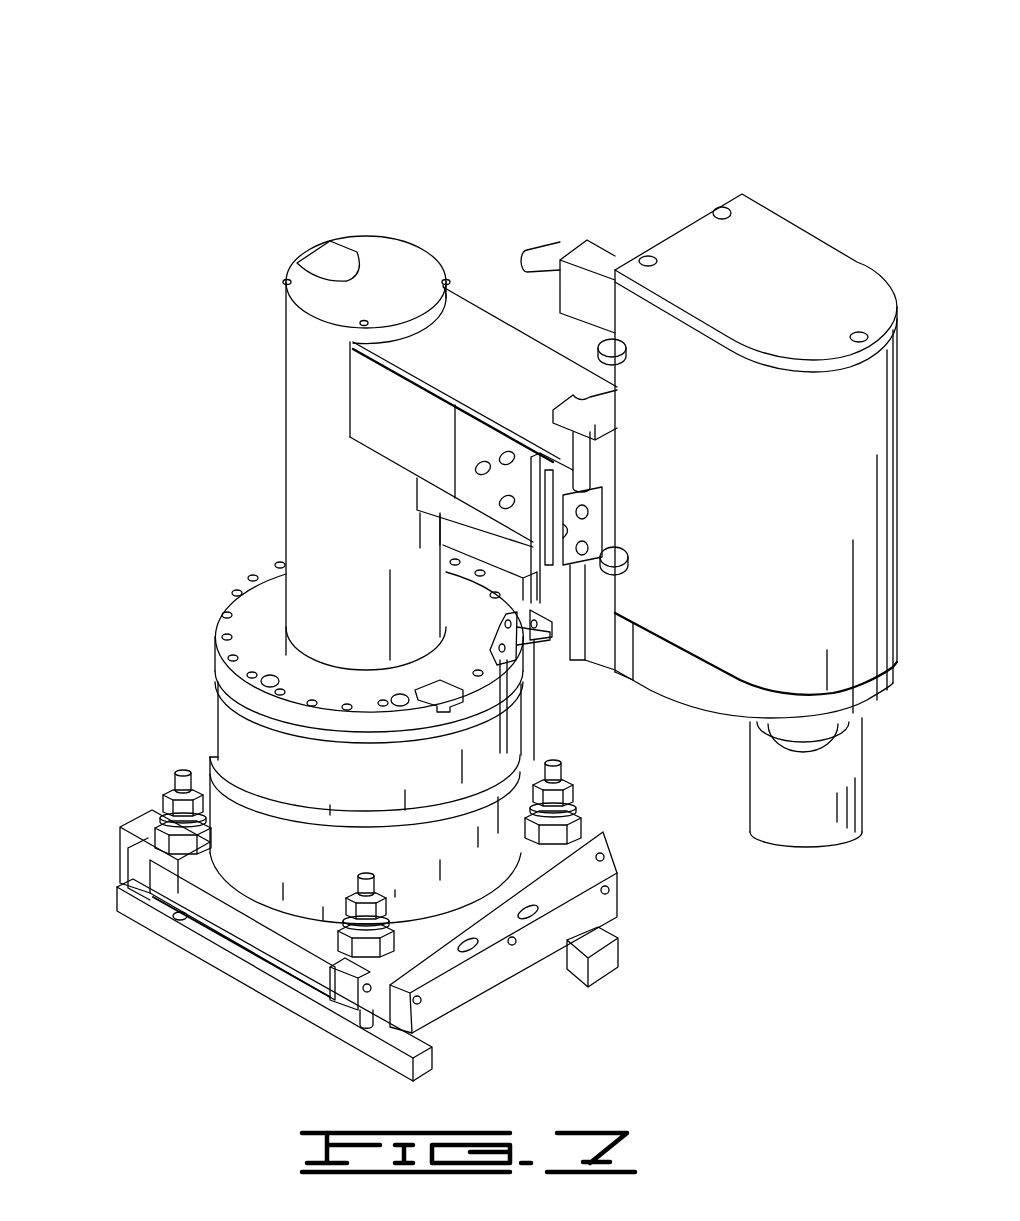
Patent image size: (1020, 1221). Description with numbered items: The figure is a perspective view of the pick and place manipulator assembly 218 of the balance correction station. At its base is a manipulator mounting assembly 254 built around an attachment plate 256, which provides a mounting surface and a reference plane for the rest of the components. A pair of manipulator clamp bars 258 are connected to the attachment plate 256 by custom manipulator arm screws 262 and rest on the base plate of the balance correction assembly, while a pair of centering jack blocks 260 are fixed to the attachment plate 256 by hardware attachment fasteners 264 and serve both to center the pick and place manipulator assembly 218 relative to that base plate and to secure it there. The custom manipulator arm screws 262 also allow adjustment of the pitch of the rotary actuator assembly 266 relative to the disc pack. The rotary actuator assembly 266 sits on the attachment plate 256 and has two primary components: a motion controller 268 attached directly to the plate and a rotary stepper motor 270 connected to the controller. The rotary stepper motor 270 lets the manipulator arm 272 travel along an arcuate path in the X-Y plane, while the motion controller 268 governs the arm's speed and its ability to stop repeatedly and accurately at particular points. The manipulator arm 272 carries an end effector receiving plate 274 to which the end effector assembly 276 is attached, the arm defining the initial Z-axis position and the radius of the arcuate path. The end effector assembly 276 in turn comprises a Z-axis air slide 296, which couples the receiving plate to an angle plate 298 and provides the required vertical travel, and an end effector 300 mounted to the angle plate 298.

The pick and place manipulator assembly 218 is at (560, 94).
The manipulator mounting assembly 254 is at (155, 790).
The attachment plate 256 is at (228, 925).
The manipulator clamp bars 258 is at (433, 1063).
The centering jack blocks 260 is at (610, 910).
The custom manipulator arm screws 262 is at (560, 790).
The hardware attachment fasteners 264 is at (617, 882).
The rotary actuator assembly 266 is at (213, 712).
The motion controller 268 is at (287, 883).
The rotary stepper motor 270 is at (485, 737).
The manipulator arm 272 is at (327, 392).
The end effector receiving plate 274 is at (530, 470).
The end effector assembly 276 is at (770, 258).
The Z-axis air slide 296 is at (607, 598).
The angle plate 298 is at (703, 687).
The end effector 300 is at (812, 833).